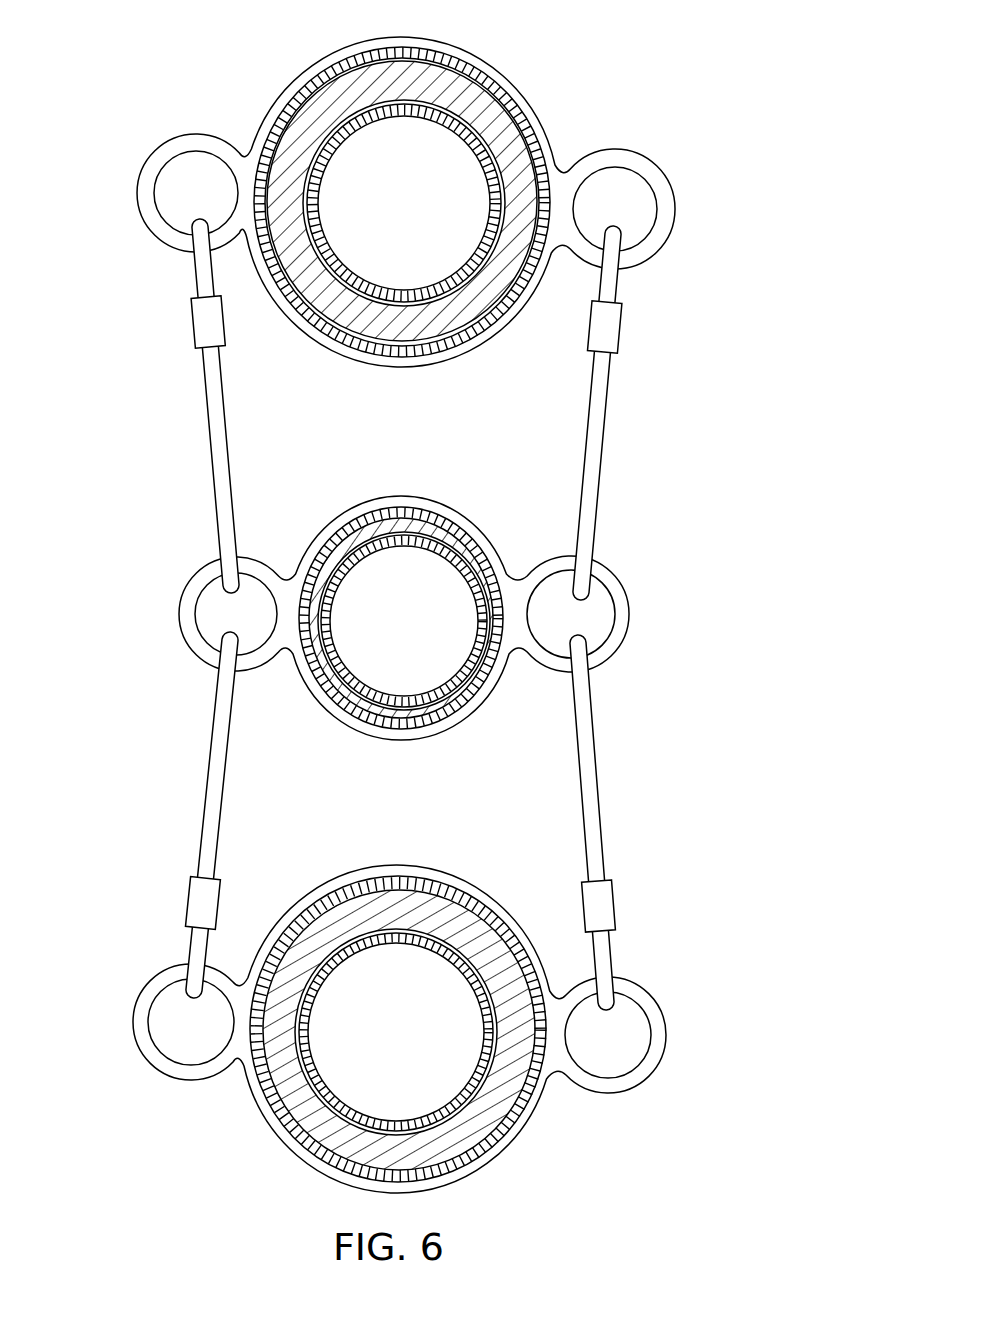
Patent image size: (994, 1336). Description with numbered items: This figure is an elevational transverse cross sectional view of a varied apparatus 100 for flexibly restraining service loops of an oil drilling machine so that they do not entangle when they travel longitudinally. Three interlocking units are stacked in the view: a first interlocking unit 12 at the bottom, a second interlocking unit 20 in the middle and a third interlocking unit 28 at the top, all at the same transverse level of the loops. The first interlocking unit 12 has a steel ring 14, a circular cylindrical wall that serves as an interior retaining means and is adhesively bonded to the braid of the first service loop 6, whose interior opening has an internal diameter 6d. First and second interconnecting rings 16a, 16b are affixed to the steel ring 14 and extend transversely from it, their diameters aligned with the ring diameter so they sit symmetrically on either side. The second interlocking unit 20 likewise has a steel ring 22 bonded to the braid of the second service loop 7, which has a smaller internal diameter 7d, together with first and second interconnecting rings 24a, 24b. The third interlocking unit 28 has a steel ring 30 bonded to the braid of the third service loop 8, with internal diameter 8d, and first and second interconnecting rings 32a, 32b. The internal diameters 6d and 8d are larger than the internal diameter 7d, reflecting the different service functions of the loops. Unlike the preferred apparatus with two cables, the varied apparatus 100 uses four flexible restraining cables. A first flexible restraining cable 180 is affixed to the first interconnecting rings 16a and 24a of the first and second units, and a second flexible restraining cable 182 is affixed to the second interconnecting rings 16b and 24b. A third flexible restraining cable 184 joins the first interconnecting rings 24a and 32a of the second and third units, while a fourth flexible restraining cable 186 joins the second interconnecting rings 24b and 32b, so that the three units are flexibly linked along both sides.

The varied apparatus 100 is at (772, 121).
The third interlocking unit 28 is at (579, 140).
The steel ring 30 is at (403, 58).
The third service loop 8 is at (445, 130).
The internal diameter 8d is at (418, 227).
The first interconnecting ring 32a is at (647, 248).
The second interconnecting ring 32b is at (137, 205).
The fourth flexible restraining cable 186 is at (213, 423).
The third flexible restraining cable 184 is at (592, 433).
The second interlocking unit 20 is at (516, 668).
The steel ring 22 is at (410, 520).
The second service loop 7 is at (447, 578).
The internal diameter 7d is at (417, 635).
The first interconnecting ring 24a is at (603, 648).
The second interconnecting ring 24b is at (180, 606).
The second flexible restraining cable 182 is at (208, 800).
The first flexible restraining cable 180 is at (592, 795).
The first interlocking unit 12 is at (573, 1093).
The steel ring 14 is at (408, 885).
The first service loop 6 is at (450, 965).
The internal diameter 6d is at (418, 1050).
The first interconnecting ring 16a is at (640, 1082).
The second interconnecting ring 16b is at (135, 1024).